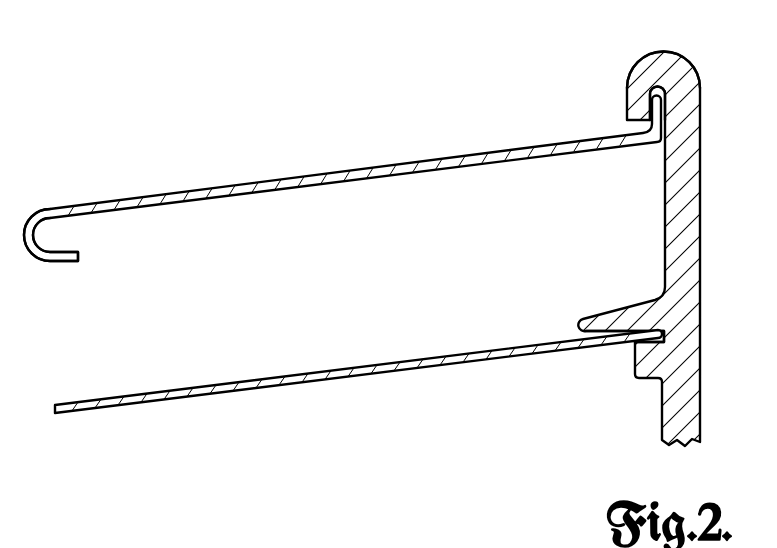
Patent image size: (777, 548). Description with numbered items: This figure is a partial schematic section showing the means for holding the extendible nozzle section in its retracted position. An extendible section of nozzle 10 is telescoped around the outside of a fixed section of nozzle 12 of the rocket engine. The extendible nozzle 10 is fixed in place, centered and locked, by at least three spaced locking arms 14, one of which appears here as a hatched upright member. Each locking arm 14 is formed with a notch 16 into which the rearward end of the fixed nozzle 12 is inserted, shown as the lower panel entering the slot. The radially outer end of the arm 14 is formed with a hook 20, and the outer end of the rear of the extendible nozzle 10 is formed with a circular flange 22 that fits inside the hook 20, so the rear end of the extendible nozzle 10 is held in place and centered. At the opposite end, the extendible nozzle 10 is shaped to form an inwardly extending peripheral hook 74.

The extendible section of nozzle 10 is at (367, 169).
The fixed section of nozzle 12 is at (327, 371).
The locking arm 14 is at (478, 250).
The notch 16 is at (645, 341).
The hook 20 is at (667, 52).
The circular flange 22 is at (699, 92).
The inwardly extending peripheral hook 74 is at (46, 262).